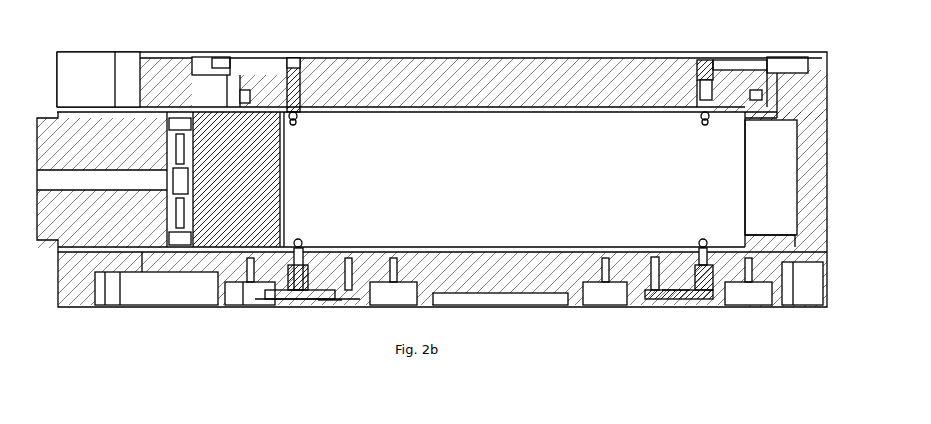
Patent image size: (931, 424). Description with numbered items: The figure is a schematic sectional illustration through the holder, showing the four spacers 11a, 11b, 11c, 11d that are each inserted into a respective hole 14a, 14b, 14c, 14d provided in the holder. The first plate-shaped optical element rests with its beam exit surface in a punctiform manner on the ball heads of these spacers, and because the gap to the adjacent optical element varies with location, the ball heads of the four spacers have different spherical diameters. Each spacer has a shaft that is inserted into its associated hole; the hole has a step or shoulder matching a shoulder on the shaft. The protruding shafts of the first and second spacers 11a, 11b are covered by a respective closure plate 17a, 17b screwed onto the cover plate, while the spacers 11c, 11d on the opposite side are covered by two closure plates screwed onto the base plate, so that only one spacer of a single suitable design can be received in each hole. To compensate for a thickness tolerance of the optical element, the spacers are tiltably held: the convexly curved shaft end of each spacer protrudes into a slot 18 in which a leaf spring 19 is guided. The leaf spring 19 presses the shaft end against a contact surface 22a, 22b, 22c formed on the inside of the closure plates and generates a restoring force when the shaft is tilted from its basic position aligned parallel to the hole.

The slot 18 is at (288, 70).
The hole 14a is at (290, 72).
The leaf spring 19 is at (292, 58).
The spacer 11a is at (297, 90).
The hole 14b is at (698, 97).
The spacer 11b is at (725, 100).
The contact surface 22c is at (727, 108).
The contact surface 22a is at (330, 300).
The contact surface 22b is at (672, 290).
The spacer 11c is at (290, 292).
The hole 14c is at (315, 295).
The closure plate 17a is at (385, 305).
The closure plate 17b is at (627, 307).
The hole 14d is at (690, 297).
The spacer 11d is at (700, 288).